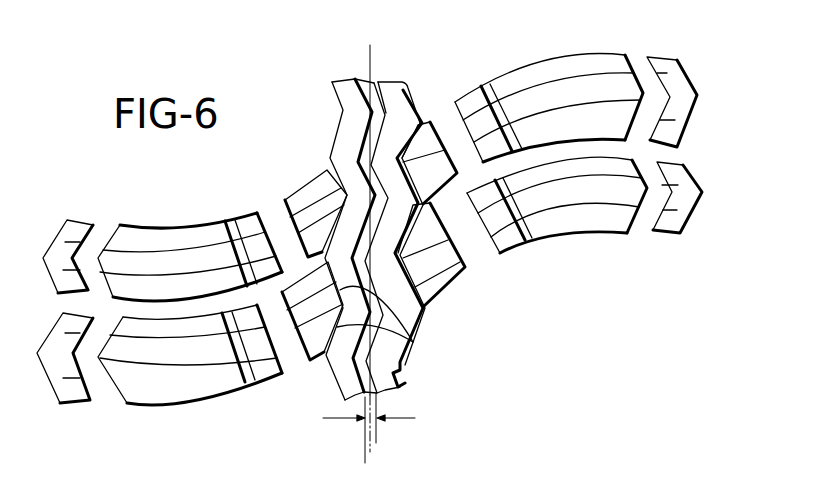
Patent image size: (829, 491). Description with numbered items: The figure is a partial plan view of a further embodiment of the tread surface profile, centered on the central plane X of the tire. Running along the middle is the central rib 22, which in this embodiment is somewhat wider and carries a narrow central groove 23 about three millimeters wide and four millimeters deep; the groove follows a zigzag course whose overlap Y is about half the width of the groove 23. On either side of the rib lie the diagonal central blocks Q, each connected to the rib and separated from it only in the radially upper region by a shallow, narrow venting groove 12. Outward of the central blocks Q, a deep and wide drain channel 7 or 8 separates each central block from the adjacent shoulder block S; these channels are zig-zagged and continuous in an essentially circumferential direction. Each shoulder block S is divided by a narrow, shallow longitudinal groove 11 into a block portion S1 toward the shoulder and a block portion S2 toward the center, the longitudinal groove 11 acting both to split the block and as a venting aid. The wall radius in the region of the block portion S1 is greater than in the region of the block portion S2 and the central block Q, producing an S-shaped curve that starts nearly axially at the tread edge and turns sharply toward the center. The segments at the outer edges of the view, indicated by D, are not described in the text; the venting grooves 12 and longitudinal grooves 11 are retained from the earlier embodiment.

The shoulder block S is at (148, 220).
The block portion S1 is at (185, 230).
The block portion S2 is at (248, 220).
The longitudinal groove 11 is at (238, 213).
The drain channel 7 is at (277, 227).
The central block Q is at (312, 180).
The central groove 23 is at (342, 98).
The central rib 22 is at (398, 98).
The drain channel 8 is at (448, 133).
The end segment D is at (662, 60).
The venting groove 12 is at (413, 342).
The central plane X is at (372, 268).
The groove overlap Y is at (361, 428).